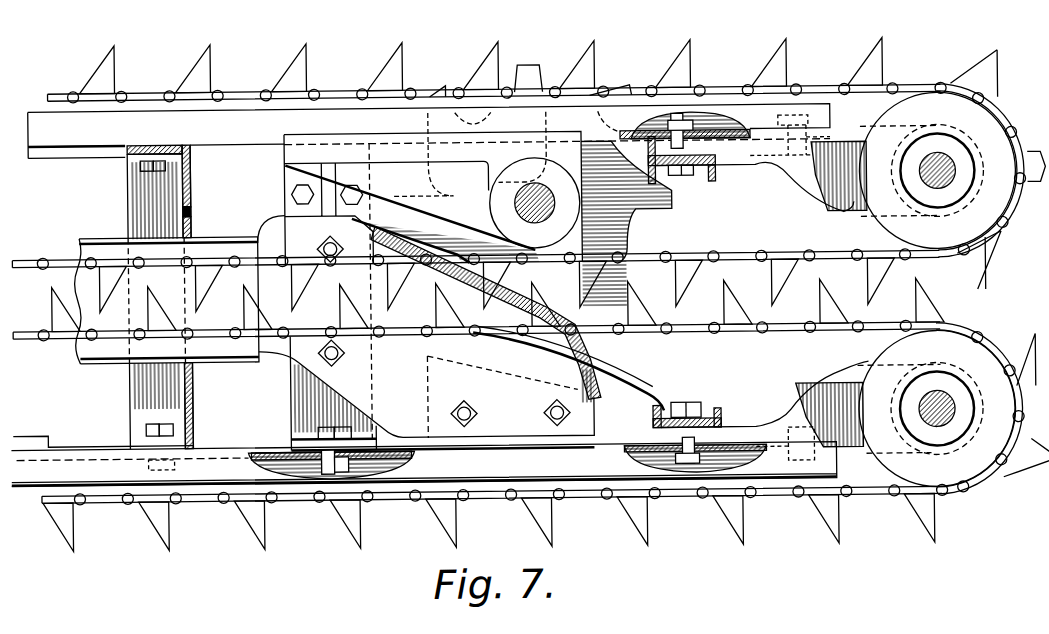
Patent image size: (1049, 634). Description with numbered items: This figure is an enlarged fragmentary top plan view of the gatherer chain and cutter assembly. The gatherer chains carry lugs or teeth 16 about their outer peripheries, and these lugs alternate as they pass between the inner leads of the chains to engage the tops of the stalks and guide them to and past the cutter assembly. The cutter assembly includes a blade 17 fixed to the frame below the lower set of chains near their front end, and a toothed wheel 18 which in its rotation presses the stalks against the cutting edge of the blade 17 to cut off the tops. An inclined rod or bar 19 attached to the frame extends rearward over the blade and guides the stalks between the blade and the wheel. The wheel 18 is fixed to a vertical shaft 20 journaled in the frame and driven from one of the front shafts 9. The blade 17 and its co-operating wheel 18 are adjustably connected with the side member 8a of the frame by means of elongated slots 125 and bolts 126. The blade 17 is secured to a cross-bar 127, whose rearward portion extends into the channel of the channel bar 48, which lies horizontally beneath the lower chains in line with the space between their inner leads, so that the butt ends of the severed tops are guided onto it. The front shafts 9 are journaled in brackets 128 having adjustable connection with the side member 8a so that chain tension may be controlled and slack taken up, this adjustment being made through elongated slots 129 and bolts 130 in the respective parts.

The side member of the frame 8a is at (84, 127).
The front shaft 9 is at (946, 177).
The lugs or teeth 16 is at (99, 63).
The blade 17 is at (580, 350).
The toothed wheel 18 is at (617, 218).
The inclined rod or bar 19 is at (648, 395).
The vertical shaft 20 is at (530, 197).
The channel bar 48 is at (100, 242).
The elongated slots 125 is at (306, 476).
The bolts 126 is at (347, 472).
The cross-bar 127 is at (298, 393).
The brackets 128 is at (808, 196).
The elongated slots 129 is at (720, 150).
The bolts 130 is at (687, 185).